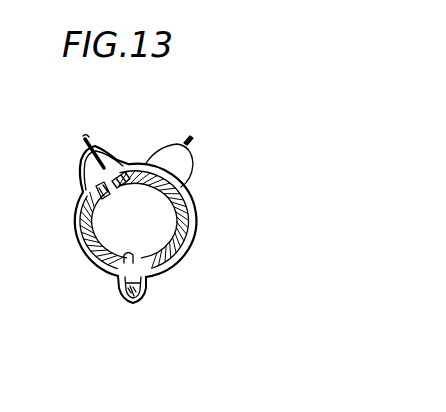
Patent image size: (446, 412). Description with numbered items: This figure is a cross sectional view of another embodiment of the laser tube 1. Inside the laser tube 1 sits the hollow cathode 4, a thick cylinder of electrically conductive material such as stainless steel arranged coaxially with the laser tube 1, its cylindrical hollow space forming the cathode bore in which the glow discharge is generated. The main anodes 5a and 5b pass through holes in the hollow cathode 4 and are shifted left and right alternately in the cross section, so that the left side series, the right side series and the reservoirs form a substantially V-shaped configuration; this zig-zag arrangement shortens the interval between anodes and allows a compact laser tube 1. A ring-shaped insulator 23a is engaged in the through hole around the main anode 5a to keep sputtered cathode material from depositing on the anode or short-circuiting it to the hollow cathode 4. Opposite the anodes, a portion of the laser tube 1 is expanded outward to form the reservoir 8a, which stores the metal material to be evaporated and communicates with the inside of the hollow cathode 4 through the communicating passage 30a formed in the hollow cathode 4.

The laser tube 1 is at (193, 227).
The hollow cathode 4 is at (190, 200).
The main anode 5a is at (92, 139).
The main anode 5b is at (192, 137).
The ring-shaped insulator 23a is at (76, 214).
The communicating passage 30a is at (112, 273).
The reservoir 8a is at (147, 290).